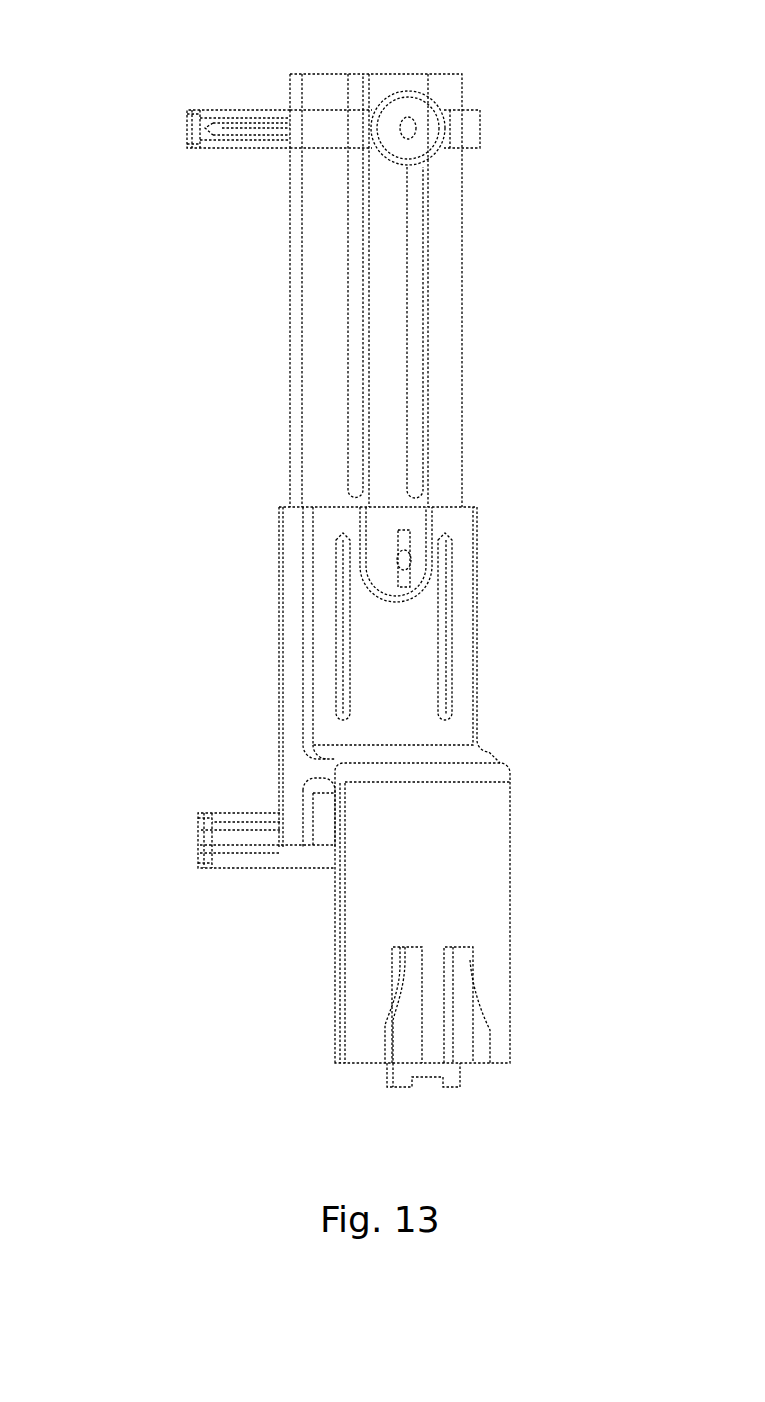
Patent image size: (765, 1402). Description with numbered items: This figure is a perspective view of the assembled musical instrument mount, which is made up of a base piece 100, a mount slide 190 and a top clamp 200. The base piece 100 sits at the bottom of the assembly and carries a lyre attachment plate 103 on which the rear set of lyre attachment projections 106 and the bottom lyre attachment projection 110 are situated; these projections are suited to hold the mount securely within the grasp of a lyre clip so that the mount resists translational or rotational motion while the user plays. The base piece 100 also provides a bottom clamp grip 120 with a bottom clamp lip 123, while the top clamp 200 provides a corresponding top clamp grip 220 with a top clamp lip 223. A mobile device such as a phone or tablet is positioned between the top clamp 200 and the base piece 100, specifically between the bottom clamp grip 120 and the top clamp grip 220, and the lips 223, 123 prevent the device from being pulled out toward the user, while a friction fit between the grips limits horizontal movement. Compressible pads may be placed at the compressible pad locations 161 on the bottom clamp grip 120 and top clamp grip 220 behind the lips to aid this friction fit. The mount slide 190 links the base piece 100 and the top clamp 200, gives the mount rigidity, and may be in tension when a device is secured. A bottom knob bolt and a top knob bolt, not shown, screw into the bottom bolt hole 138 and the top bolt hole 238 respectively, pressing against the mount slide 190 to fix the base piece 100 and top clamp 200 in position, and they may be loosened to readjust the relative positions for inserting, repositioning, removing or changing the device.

The base piece 100 is at (492, 843).
The lyre attachment plate 103 is at (488, 940).
The rear set of lyre attachment projections 106 is at (480, 1043).
The bottom lyre attachment projection 110 is at (392, 1082).
The bottom clamp grip 120 is at (200, 862).
The bottom clamp lip 123 is at (200, 820).
The bottom bolt hole 138 is at (410, 565).
The slot 161 is at (235, 135).
The mount slide 190 is at (443, 329).
The top clamp 200 is at (470, 130).
The top clamp grip 220 is at (246, 108).
The top clamp lip 223 is at (187, 133).
The top bolt hole 238 is at (415, 142).